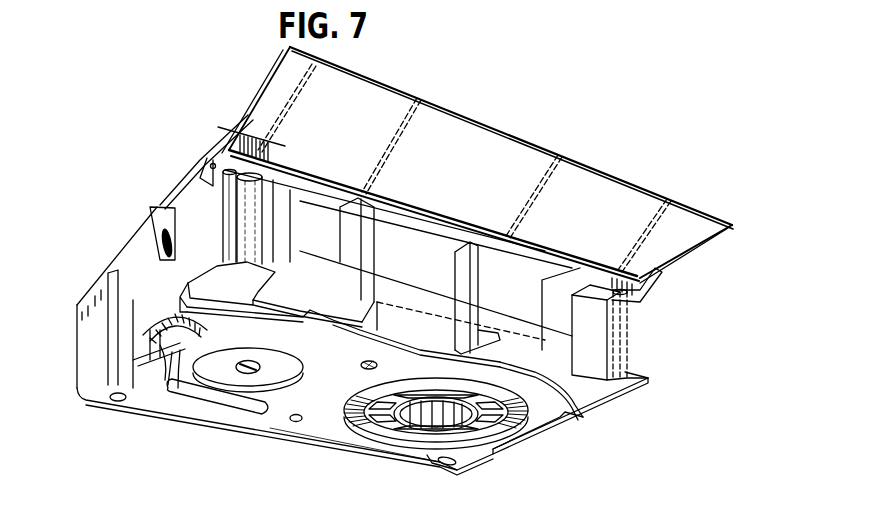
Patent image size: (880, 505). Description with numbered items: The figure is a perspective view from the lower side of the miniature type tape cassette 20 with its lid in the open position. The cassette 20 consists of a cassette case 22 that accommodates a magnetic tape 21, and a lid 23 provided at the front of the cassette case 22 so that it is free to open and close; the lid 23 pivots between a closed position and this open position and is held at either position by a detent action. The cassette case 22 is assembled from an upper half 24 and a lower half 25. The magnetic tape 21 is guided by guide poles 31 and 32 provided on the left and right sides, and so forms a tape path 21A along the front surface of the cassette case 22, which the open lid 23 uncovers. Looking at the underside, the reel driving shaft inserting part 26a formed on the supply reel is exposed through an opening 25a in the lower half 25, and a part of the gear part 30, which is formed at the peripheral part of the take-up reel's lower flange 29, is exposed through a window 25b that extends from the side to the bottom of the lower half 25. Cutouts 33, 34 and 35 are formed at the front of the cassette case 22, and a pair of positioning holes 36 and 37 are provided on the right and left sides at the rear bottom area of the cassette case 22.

The miniature type tape cassette 20 is at (517, 107).
The magnetic tape 21 is at (440, 250).
The tape path 21A is at (410, 228).
The cassette case 22 is at (122, 245).
The lid 23 is at (575, 172).
The upper half 24 is at (81, 323).
The lower half 25 is at (82, 370).
The opening 25a is at (355, 423).
The window 25b is at (172, 395).
The reel driving shaft inserting part 26a is at (408, 420).
The lower flange 29 is at (171, 382).
The gear part 30 is at (165, 338).
The guide pole 31 is at (626, 336).
The guide pole 32 is at (257, 217).
The cutout 33 is at (530, 363).
The cutout 34 is at (390, 318).
The cutout 35 is at (313, 302).
The positioning hole 36 is at (117, 401).
The positioning hole 37 is at (440, 466).